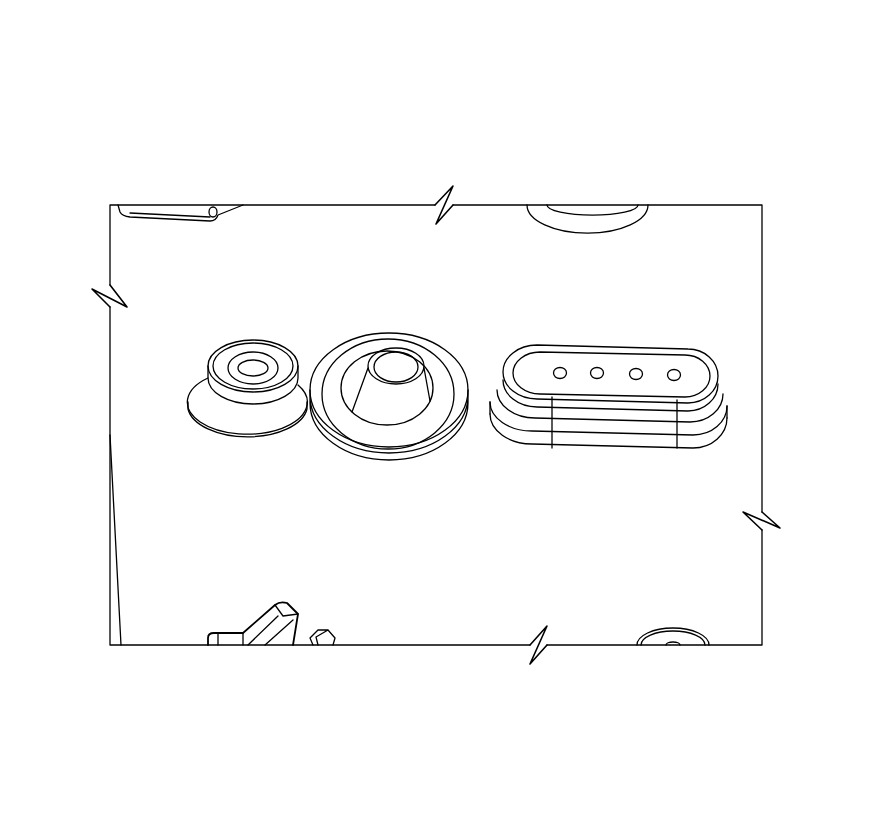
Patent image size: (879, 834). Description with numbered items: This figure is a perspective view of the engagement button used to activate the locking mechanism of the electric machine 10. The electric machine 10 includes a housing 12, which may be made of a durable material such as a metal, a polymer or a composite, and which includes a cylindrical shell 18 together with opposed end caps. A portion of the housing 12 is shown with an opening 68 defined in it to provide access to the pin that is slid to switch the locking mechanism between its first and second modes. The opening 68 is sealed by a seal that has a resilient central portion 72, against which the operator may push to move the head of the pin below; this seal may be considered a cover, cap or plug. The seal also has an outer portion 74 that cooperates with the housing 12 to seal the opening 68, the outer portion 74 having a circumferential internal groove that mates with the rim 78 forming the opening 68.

The electric machine 10 is at (90, 92).
The housing 12 is at (166, 140).
The cylindrical shell 18 is at (347, 253).
The opening 68 is at (340, 323).
The resilient central portion 72 is at (397, 363).
The outer portion 74 is at (358, 465).
The rim 78 is at (435, 353).